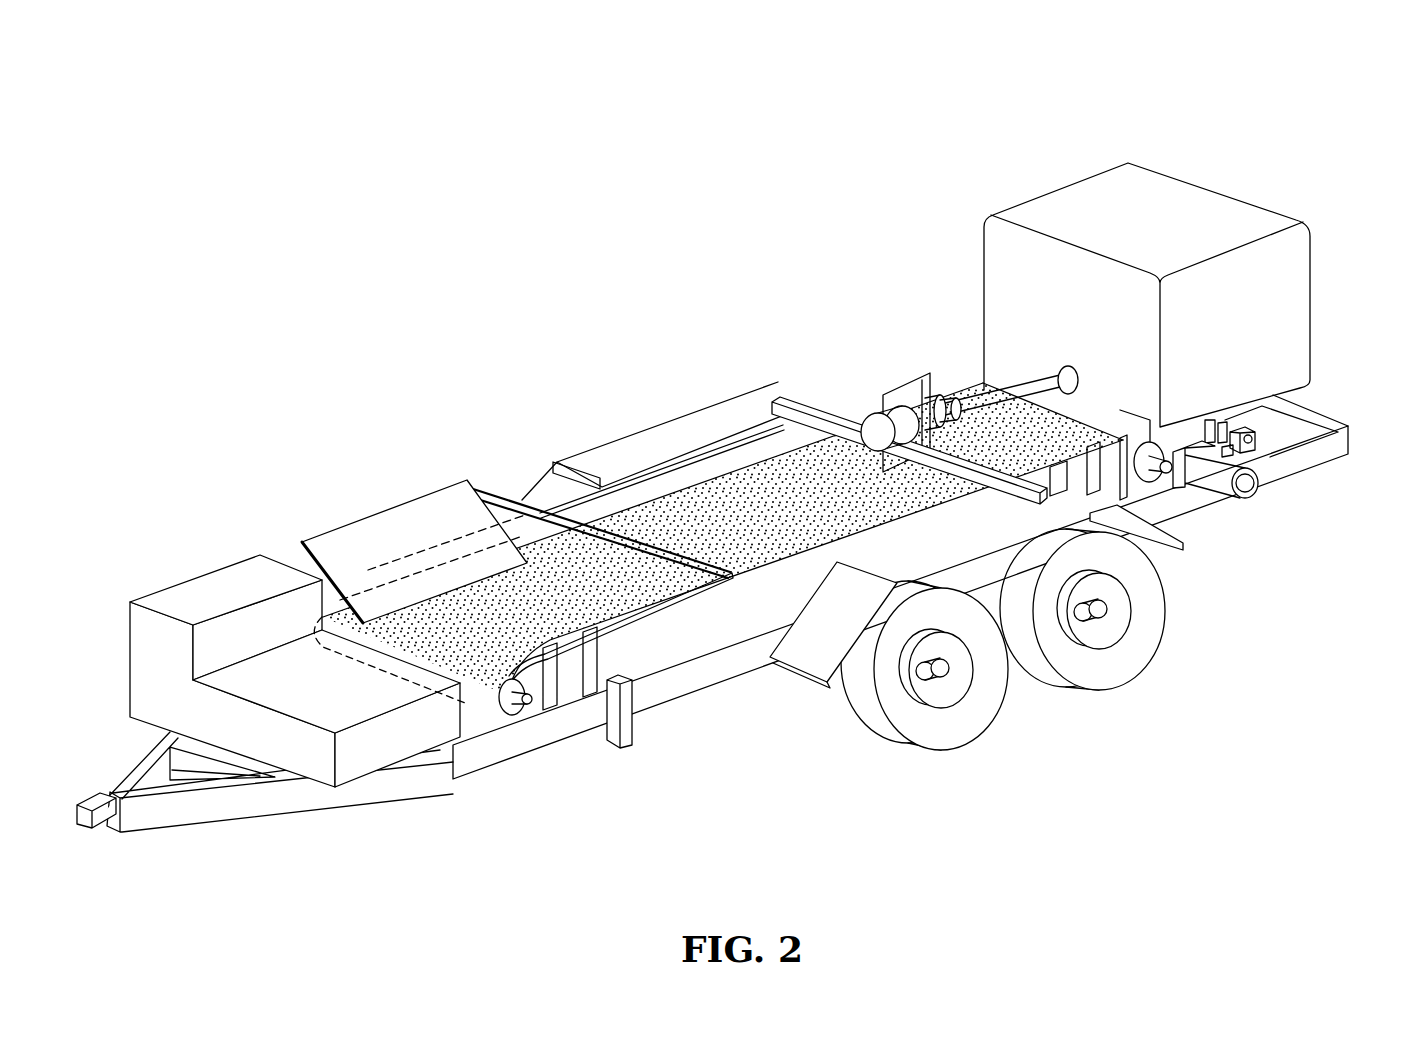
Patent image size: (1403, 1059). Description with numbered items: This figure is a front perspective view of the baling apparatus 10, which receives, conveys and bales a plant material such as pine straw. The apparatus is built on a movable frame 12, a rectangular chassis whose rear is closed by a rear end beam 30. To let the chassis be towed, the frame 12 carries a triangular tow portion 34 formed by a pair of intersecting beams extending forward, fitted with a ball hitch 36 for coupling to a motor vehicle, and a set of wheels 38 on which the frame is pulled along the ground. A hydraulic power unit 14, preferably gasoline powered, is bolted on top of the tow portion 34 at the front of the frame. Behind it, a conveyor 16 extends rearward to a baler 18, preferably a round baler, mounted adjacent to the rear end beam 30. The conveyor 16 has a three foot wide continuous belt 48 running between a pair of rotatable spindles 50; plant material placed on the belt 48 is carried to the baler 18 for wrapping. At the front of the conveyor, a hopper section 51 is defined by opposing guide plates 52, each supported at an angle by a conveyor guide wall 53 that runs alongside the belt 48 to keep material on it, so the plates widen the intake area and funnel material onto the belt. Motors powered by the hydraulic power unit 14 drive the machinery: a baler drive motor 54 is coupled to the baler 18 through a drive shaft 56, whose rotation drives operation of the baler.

The baling apparatus 10 is at (812, 136).
The movable frame 12 is at (443, 782).
The hydraulic power unit 14 is at (303, 703).
The conveyor 16 is at (627, 530).
The baler 18 is at (1219, 338).
The rear end beam 30 is at (1313, 420).
The tow portion 34 is at (168, 812).
The ball hitch 36 is at (92, 802).
The wheels 38 is at (940, 742).
The continuous belt 48 is at (771, 513).
The rotatable spindles 50 is at (528, 704).
The hopper section 51 is at (355, 506).
The guide plates 52 is at (384, 546).
The conveyor guide wall 53 is at (570, 517).
The baler drive motor 54 is at (877, 423).
The drive shaft 56 is at (1030, 390).